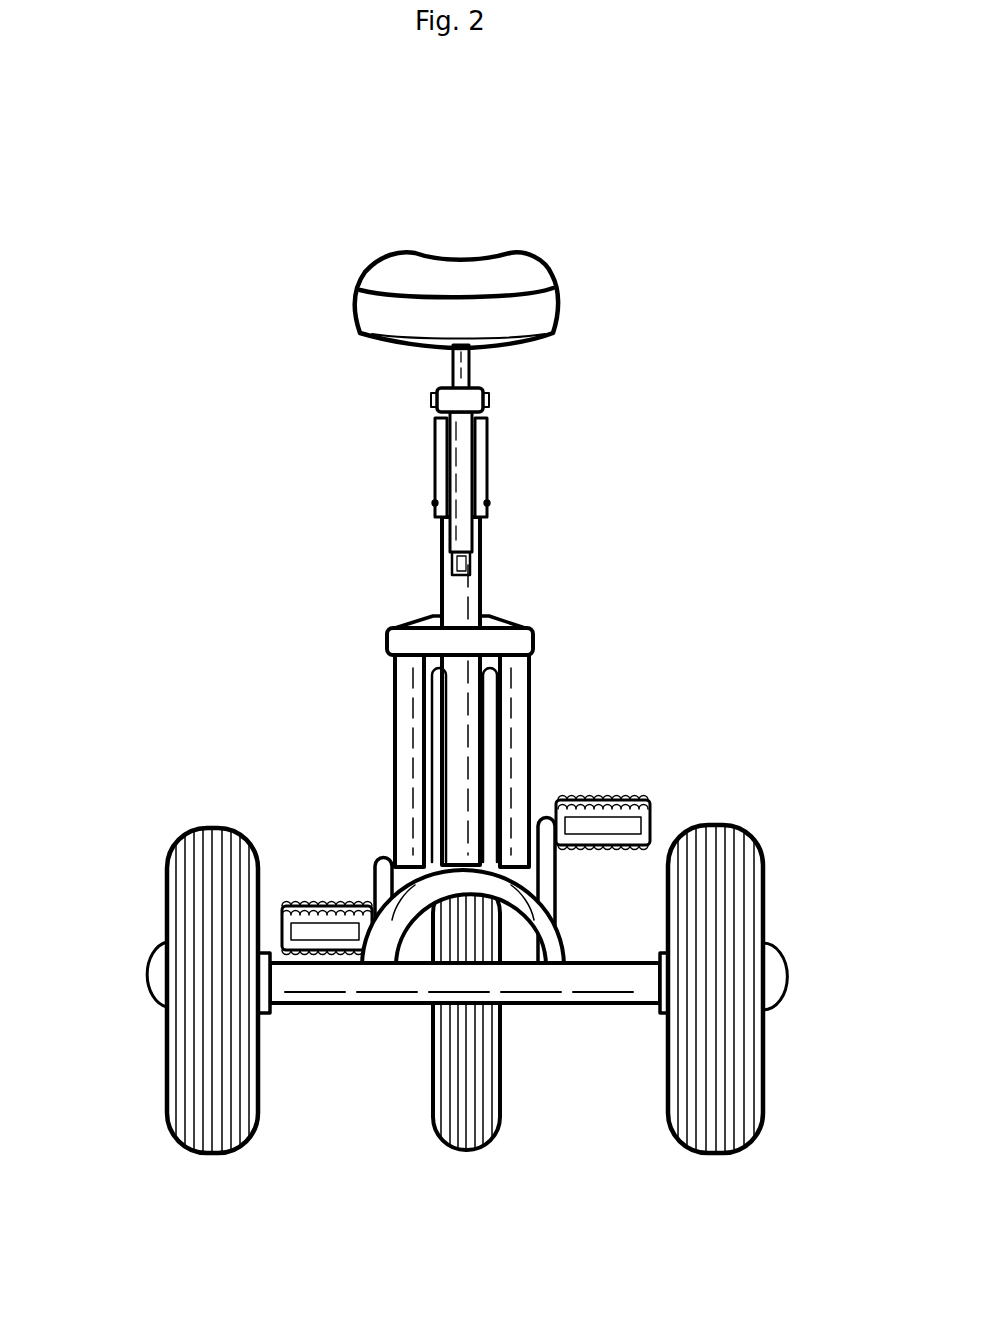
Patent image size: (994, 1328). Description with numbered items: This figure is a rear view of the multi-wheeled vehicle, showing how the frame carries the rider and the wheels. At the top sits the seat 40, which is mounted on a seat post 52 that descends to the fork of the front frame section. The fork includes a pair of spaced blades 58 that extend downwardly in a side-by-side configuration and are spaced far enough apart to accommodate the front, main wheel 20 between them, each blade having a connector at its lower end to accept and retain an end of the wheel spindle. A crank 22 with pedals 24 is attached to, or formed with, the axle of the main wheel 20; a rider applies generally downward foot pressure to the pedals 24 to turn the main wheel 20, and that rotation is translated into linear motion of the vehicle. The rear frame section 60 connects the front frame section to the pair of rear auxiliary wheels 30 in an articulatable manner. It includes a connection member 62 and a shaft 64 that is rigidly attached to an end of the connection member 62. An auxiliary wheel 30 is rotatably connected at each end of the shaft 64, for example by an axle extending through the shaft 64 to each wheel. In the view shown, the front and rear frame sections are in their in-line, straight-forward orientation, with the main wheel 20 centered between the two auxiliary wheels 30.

The main wheel 20 is at (433, 1098).
The crank 22 is at (557, 868).
The pedals 24 is at (328, 905).
The auxiliary wheels 30 is at (167, 1062).
The seat 40 is at (540, 275).
The seat post 52 is at (452, 370).
The blades 58 is at (395, 712).
The rear frame section 60 is at (497, 571).
The connection member 62 is at (443, 578).
The shaft 64 is at (535, 1005).